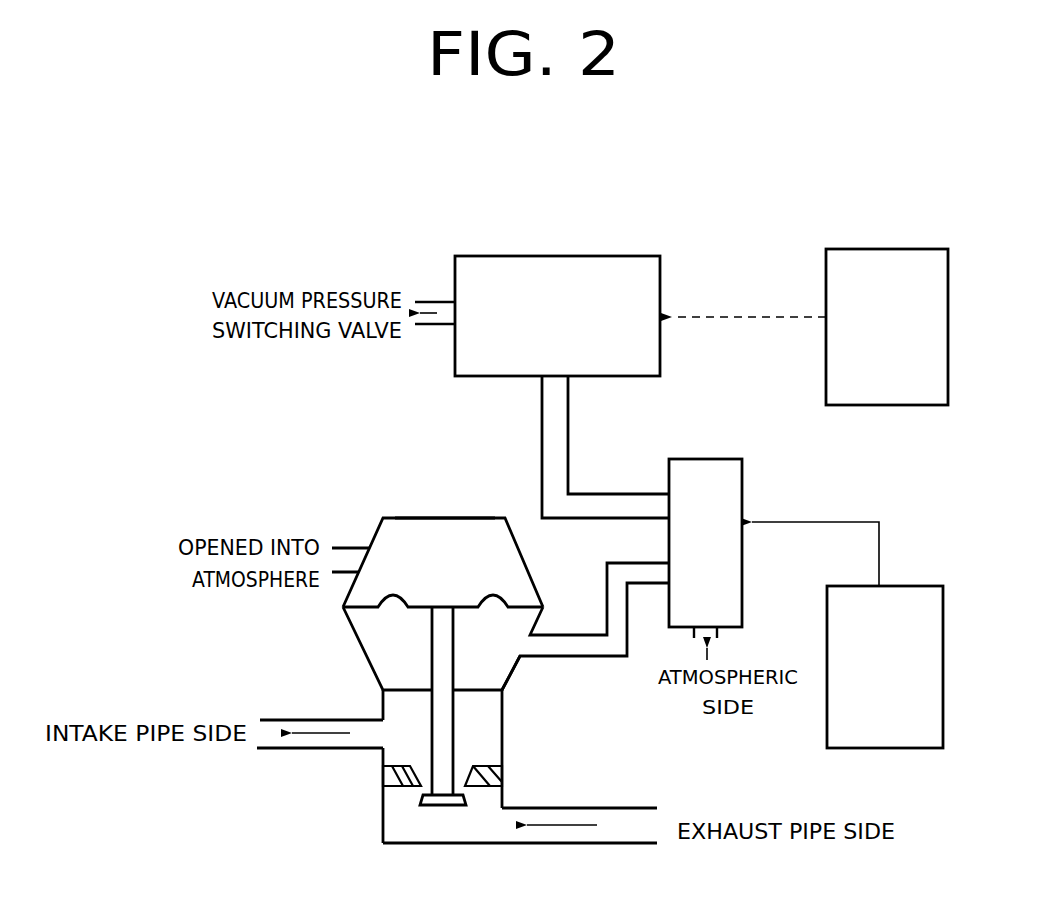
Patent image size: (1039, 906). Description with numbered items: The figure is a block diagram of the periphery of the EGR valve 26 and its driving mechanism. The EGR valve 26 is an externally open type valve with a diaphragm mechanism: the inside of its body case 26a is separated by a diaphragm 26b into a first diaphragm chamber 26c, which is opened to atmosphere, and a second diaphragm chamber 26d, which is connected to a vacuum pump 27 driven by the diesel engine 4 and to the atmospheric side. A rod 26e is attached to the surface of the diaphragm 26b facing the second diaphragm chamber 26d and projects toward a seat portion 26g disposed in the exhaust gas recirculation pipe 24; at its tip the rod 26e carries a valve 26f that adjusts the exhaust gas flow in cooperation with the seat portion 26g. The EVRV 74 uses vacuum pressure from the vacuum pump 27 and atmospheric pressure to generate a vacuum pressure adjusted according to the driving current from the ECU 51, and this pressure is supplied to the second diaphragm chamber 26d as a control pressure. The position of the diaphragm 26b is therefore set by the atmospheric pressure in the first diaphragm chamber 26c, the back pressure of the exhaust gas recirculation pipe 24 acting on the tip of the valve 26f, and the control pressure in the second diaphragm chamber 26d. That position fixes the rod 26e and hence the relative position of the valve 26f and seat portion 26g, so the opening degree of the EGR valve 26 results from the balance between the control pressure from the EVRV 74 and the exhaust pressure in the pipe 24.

The diesel engine 4 is at (948, 318).
The exhaust gas recirculation pipe 24 is at (643, 808).
The EGR valve 26 is at (530, 672).
The body case 26a is at (377, 533).
The diaphragm 26b is at (422, 607).
The first diaphragm chamber 26c is at (447, 518).
The second diaphragm chamber 26d is at (363, 625).
The rod 26e is at (438, 660).
The valve 26f is at (433, 803).
The seat portion 26g is at (502, 770).
The vacuum pump 27 is at (645, 256).
The ECU 51 is at (943, 676).
The EVRV 74 is at (735, 459).